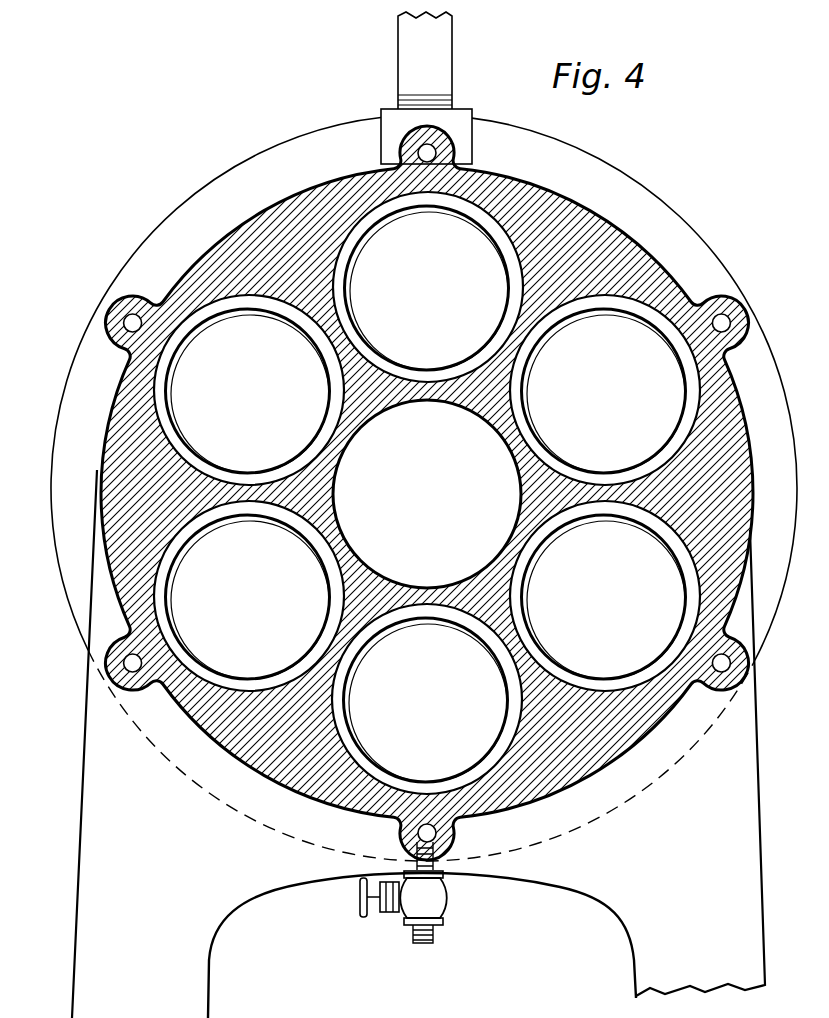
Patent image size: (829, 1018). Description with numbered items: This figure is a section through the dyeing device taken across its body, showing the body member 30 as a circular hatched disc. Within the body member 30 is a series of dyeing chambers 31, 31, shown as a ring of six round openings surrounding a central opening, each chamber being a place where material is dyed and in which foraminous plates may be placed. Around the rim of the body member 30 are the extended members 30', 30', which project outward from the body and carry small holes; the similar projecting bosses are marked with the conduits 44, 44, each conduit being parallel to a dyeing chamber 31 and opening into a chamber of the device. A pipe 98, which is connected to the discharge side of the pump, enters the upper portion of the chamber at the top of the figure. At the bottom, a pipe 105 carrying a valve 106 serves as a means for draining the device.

The pipe 98 is at (425, 60).
The body member 30 is at (427, 493).
The extended member 30' is at (303, 209).
The dyeing chamber 31 is at (365, 232).
The conduit 44 is at (724, 321).
The valve 106 is at (437, 900).
The pipe 105 is at (433, 937).